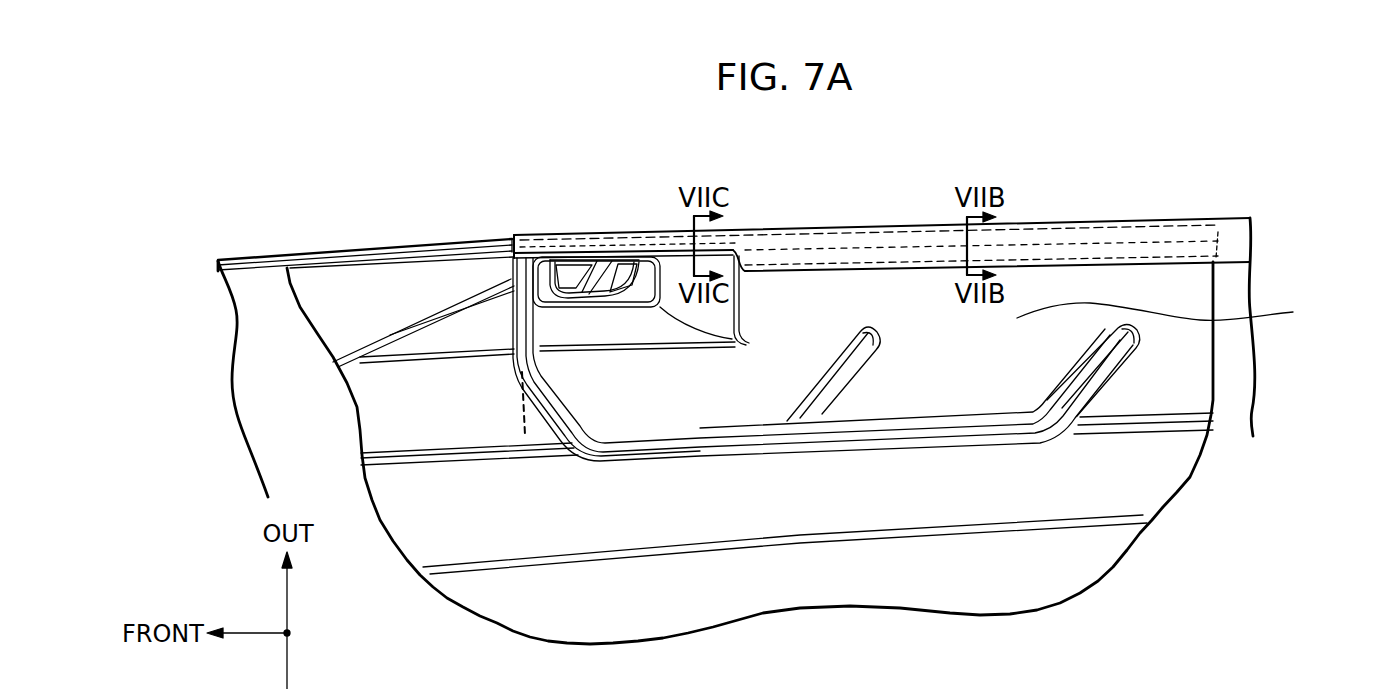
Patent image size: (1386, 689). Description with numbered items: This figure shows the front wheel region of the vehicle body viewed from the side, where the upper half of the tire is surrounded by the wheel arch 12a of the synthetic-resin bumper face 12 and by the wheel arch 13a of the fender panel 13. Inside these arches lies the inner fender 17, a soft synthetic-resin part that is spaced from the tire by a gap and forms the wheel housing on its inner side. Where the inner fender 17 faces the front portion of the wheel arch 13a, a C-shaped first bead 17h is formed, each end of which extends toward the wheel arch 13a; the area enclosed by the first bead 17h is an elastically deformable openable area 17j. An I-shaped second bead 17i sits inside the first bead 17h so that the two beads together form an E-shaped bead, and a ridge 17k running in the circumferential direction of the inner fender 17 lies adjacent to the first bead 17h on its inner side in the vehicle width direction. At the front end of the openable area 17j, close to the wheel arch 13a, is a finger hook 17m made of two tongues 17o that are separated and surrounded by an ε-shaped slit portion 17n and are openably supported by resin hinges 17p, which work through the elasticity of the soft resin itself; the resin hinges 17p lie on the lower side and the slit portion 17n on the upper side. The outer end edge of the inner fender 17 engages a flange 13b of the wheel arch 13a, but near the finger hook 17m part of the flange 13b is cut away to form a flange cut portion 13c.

The bumper face 12 is at (365, 235).
The wheel arch 12a is at (257, 256).
The fender panel 13 is at (911, 208).
The wheel arch 13a is at (845, 228).
The flange 13b is at (1047, 240).
The flange cut portion 13c is at (657, 255).
The inner fender 17 is at (1185, 512).
The first bead 17h is at (727, 457).
The second bead 17i is at (850, 377).
The openable area 17j is at (786, 290).
The ridge 17k is at (920, 538).
The finger hook 17m is at (580, 316).
The slit portion 17n is at (617, 280).
The tongues 17o is at (572, 277).
The resin hinges 17p is at (585, 260).